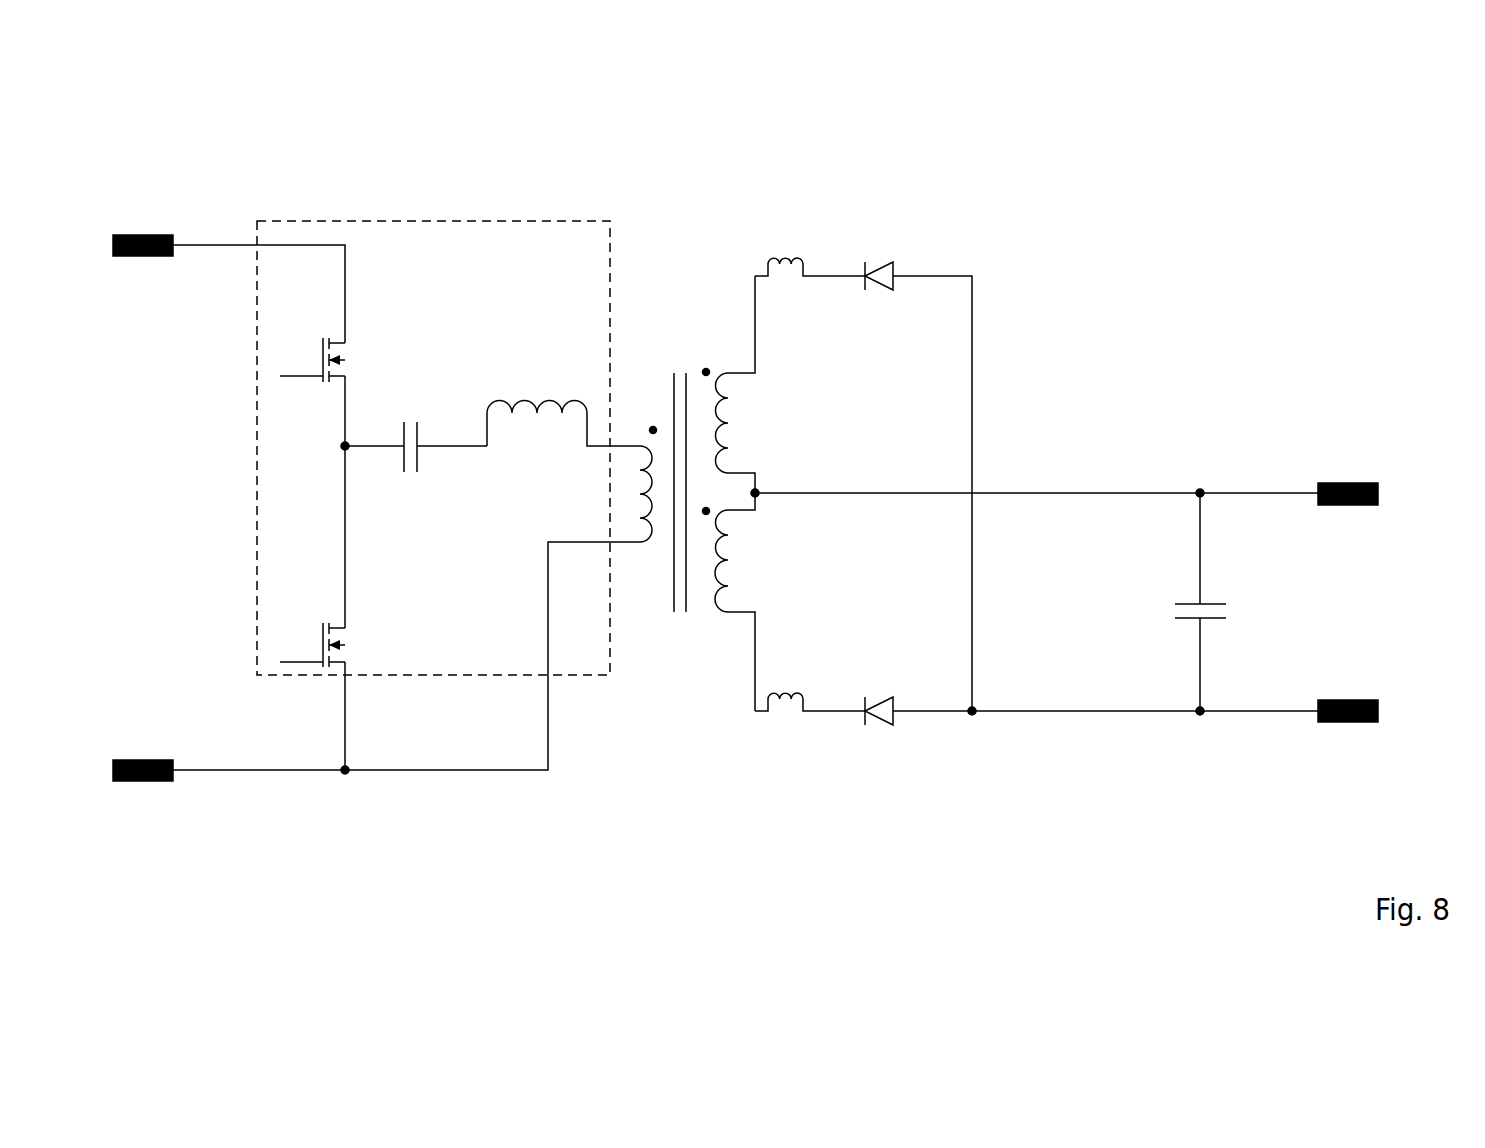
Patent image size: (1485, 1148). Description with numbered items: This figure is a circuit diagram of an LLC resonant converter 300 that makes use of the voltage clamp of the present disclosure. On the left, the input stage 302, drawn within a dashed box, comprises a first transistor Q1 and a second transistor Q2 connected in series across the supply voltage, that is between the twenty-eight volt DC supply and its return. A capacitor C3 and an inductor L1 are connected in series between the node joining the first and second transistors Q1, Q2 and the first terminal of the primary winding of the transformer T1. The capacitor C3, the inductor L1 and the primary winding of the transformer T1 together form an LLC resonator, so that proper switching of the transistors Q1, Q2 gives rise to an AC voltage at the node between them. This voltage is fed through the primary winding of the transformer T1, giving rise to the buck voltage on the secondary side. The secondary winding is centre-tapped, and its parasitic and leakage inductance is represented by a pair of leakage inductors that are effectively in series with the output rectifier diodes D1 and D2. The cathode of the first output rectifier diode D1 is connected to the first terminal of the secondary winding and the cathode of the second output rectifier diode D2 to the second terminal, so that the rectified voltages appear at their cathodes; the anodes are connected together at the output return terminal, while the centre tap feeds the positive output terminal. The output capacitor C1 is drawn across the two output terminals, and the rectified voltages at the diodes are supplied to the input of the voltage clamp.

The LLC resonant converter 300 is at (1200, 148).
The input stage 302 is at (435, 221).
The first transistor Q1 is at (312, 331).
The second transistor Q2 is at (312, 615).
The capacitor C3 is at (416, 432).
The inductor L1 is at (563, 405).
The transformer T1 is at (697, 493).
The first output rectifier diode D1 is at (878, 296).
The second output rectifier diode D2 is at (878, 731).
The output capacitor C1 is at (1221, 602).